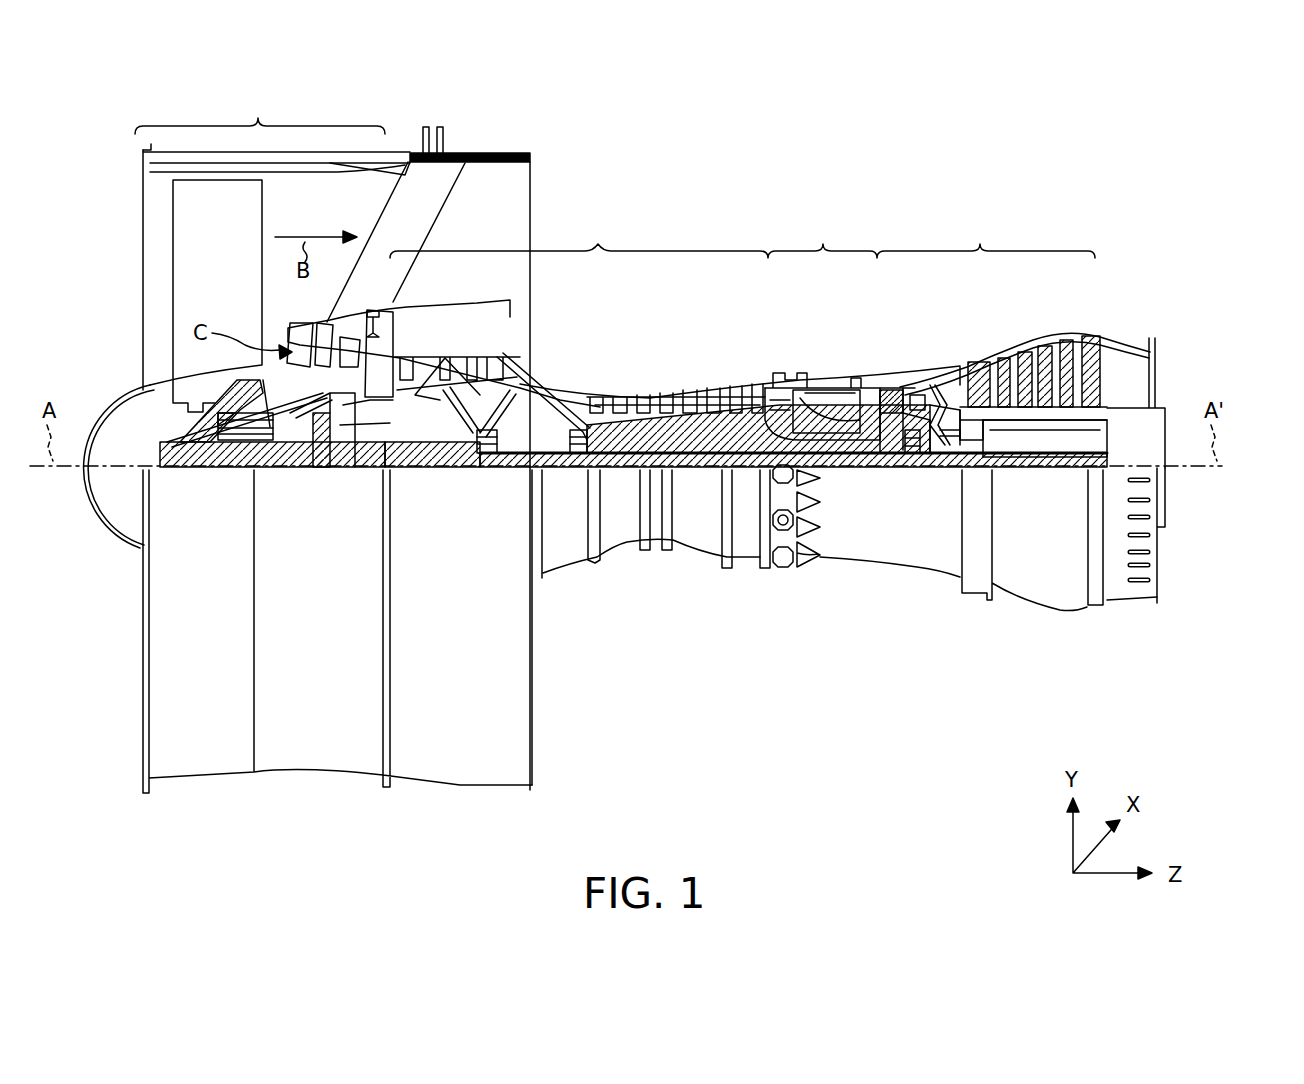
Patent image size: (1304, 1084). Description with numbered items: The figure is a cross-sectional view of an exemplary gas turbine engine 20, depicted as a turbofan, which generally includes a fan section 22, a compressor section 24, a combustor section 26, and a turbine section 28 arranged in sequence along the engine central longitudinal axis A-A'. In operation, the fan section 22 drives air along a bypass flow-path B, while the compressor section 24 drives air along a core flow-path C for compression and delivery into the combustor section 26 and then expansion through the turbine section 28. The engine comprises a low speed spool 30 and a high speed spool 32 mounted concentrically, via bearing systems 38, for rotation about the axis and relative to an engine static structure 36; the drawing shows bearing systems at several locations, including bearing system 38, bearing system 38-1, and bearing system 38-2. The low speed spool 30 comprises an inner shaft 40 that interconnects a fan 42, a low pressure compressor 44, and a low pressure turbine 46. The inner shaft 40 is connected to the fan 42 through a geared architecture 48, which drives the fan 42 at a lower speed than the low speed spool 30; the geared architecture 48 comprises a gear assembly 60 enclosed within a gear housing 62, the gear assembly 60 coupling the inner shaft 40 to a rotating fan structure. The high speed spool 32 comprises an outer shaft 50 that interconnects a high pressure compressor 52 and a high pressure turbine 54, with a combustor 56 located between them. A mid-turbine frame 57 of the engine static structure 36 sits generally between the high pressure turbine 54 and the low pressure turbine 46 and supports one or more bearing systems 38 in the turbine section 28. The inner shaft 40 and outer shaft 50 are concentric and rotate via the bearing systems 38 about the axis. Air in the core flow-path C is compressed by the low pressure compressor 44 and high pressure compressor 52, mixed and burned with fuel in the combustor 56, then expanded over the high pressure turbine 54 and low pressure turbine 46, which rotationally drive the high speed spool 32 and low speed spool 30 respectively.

The gas turbine engine 20 is at (881, 180).
The fan section 22 is at (258, 124).
The compressor section 24 is at (598, 254).
The combustor section 26 is at (823, 254).
The turbine section 28 is at (980, 254).
The low speed spool 30 is at (705, 472).
The high speed spool 32 is at (750, 446).
The engine static structure 36 is at (907, 547).
The bearing system 38 is at (924, 470).
The bearing system 38-1 is at (227, 457).
The bearing system 38-2 is at (480, 468).
The inner shaft 40 is at (553, 470).
The fan 42 is at (224, 283).
The low pressure compressor 44 is at (487, 362).
The low pressure turbine 46 is at (1027, 347).
The geared architecture 48 is at (346, 478).
The outer shaft 50 is at (820, 463).
The high pressure compressor 52 is at (670, 399).
The high pressure turbine 54 is at (882, 390).
The combustor 56 is at (817, 405).
The mid-turbine frame 57 is at (933, 384).
The gear assembly 60 is at (355, 445).
The gear housing 62 is at (350, 408).